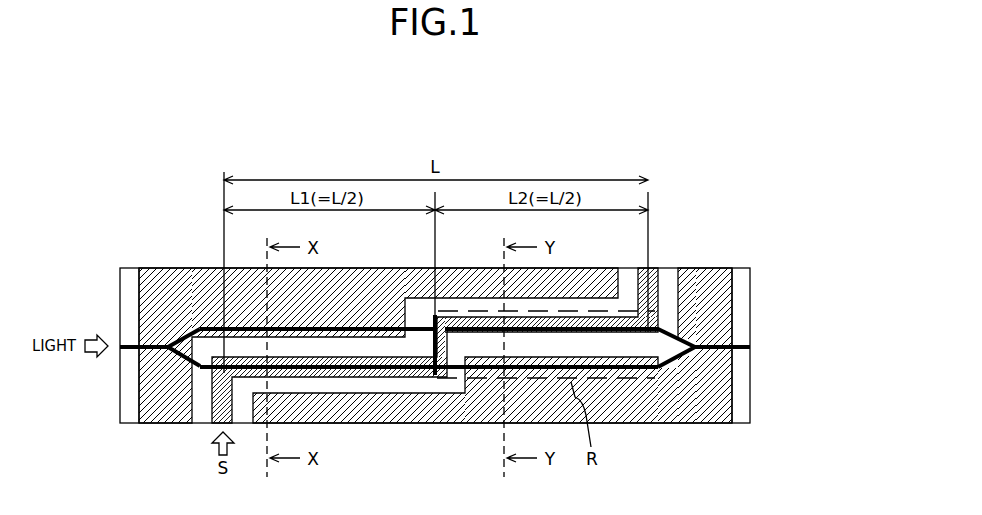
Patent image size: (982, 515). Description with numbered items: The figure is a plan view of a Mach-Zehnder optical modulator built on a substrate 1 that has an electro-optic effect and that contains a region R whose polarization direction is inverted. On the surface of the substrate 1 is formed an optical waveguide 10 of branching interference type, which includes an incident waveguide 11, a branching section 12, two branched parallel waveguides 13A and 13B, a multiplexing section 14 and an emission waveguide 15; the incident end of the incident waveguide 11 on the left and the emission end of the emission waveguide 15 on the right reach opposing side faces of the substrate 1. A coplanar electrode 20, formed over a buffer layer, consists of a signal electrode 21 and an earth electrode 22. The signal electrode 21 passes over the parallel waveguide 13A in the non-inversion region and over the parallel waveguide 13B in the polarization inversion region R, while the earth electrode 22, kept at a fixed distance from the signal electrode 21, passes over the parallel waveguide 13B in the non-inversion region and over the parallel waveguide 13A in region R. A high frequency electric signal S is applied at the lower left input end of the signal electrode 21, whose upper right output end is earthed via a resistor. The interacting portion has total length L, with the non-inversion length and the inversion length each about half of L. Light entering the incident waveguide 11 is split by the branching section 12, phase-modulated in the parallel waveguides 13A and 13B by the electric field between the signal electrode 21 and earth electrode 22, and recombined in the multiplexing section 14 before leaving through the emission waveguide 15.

The substrate 1 is at (752, 296).
The optical waveguide 10 is at (130, 356).
The incident waveguide 11 is at (122, 338).
The branching section 12 is at (170, 327).
The parallel waveguide 13A is at (365, 378).
The parallel waveguide 13B is at (377, 327).
The multiplexing section 14 is at (695, 350).
The emission waveguide 15 is at (744, 352).
The coplanar electrode 20 is at (152, 425).
The signal electrode 21 is at (225, 413).
The earth electrode 22 is at (605, 277).